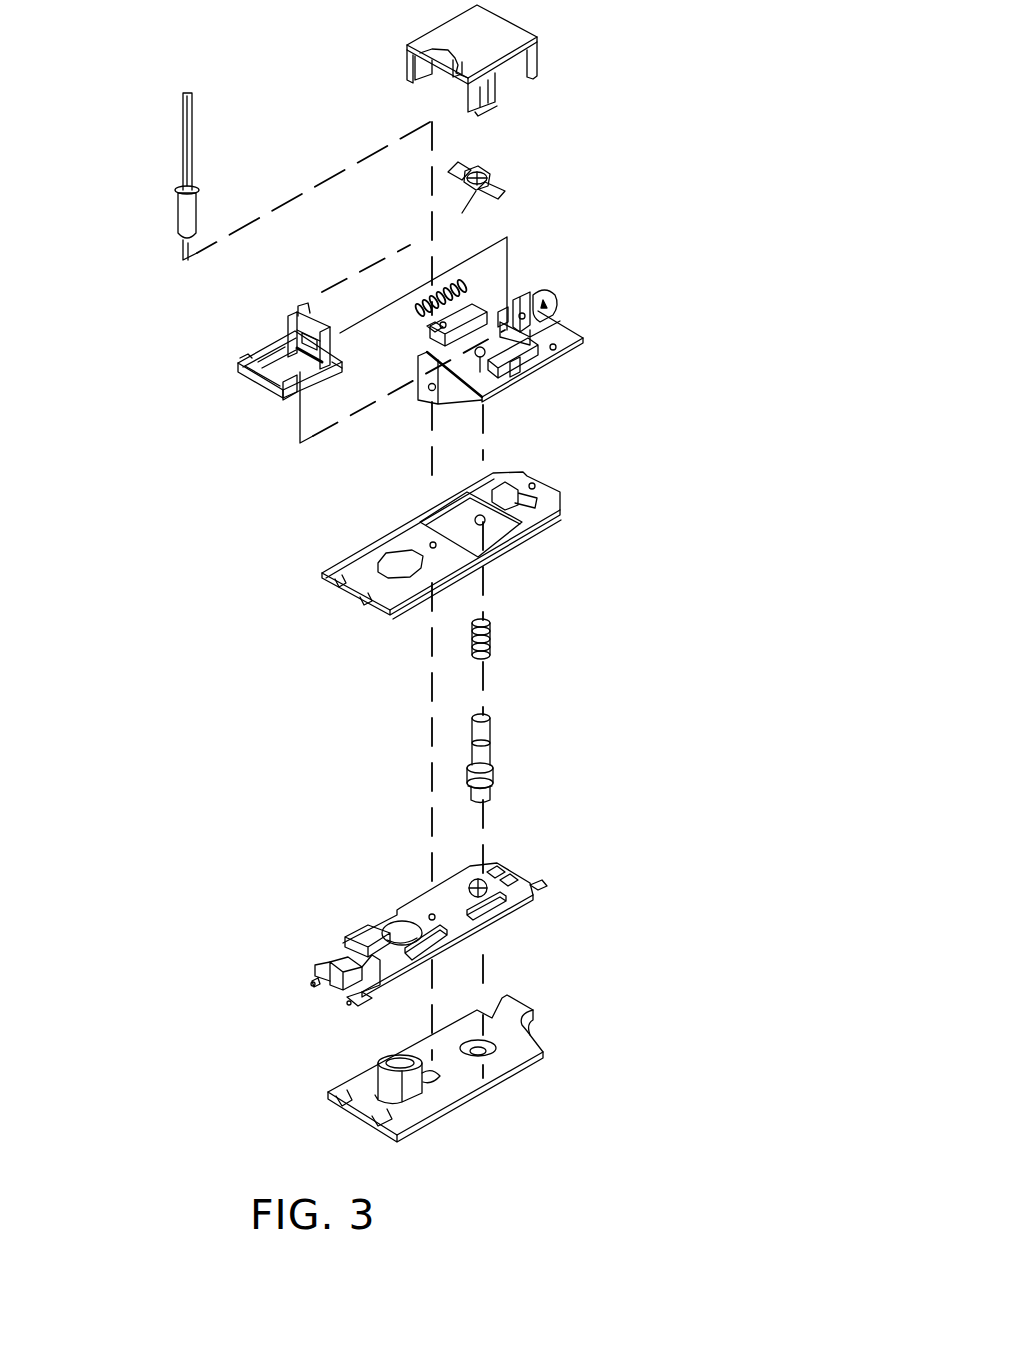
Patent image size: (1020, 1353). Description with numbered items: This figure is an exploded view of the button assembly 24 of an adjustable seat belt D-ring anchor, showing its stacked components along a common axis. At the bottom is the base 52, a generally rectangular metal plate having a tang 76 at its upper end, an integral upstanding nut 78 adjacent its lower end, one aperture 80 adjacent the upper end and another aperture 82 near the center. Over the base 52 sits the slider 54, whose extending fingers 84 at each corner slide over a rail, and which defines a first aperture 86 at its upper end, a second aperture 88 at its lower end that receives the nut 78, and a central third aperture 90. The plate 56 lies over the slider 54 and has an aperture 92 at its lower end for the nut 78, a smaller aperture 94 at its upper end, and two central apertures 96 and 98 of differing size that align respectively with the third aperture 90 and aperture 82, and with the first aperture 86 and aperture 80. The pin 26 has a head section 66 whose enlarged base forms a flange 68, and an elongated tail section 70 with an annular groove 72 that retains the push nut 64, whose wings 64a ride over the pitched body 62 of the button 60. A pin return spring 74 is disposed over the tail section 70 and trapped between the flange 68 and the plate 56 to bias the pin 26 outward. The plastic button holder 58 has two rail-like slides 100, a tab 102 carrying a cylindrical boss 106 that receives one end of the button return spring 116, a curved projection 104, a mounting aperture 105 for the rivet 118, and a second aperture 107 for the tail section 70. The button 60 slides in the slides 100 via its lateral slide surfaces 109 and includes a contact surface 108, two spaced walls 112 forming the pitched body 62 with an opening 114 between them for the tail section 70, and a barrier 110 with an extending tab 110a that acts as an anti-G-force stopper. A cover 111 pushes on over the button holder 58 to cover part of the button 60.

The button assembly 24 is at (426, 593).
The pin 26 is at (491, 755).
The base 52 is at (487, 1088).
The slider 54 is at (425, 944).
The plate 56 is at (483, 534).
The button holder 58 is at (562, 329).
The button 60 is at (426, 384).
The pitched body 62 is at (237, 358).
The push nut 64 is at (520, 164).
The wings 64a is at (505, 192).
The head section 66 is at (493, 795).
The flange 68 is at (468, 788).
The tail section 70 is at (490, 725).
The annular groove 72 is at (490, 743).
The pin return spring 74 is at (490, 647).
The tang 76 is at (533, 1010).
The nut 78 is at (410, 1088).
The aperture 80 is at (493, 1053).
The aperture 82 is at (438, 1080).
The fingers 84 is at (547, 888).
The first aperture 86 is at (467, 883).
The second aperture 88 is at (388, 925).
The third aperture 90 is at (432, 914).
The aperture 92 is at (390, 555).
The aperture 94 is at (530, 502).
The central aperture 96 is at (448, 523).
The central aperture 98 is at (480, 516).
The rail-like slides 100 is at (505, 312).
The tab 102 is at (580, 323).
The curved projection 104 is at (560, 308).
The mounting aperture 105 is at (418, 393).
The cylindrical boss 106 is at (557, 300).
The second aperture 107 is at (525, 347).
The contact surface 108 is at (252, 377).
The lateral slide surfaces 109 is at (247, 357).
The barrier 110 is at (324, 308).
The extending tab 110a is at (300, 315).
The cover 111 is at (571, 66).
The spaced walls 112 is at (300, 400).
The opening 114 is at (287, 358).
The button return spring 116 is at (437, 296).
The rivet 118 is at (183, 148).